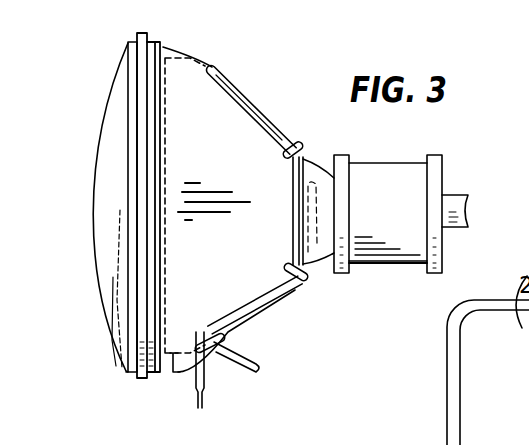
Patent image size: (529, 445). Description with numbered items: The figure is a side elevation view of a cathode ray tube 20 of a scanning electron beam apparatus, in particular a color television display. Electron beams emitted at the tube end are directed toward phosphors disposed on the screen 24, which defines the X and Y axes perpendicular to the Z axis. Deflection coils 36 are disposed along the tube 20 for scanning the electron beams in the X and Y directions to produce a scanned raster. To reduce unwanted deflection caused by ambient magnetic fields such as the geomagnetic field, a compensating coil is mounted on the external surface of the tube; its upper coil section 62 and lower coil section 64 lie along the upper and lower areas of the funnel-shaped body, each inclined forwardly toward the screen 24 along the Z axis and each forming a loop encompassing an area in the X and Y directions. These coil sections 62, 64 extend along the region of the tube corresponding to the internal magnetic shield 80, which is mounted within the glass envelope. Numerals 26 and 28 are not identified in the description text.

The cathode ray tube 20 is at (259, 108).
The screen 24 is at (118, 88).
The lens flange 26 is at (146, 43).
The reflector flange 28 is at (165, 52).
The deflection coils 36 is at (377, 262).
The upper coil section 62 is at (264, 128).
The lower coil section 64 is at (264, 309).
The internal magnetic shield 80 is at (175, 360).